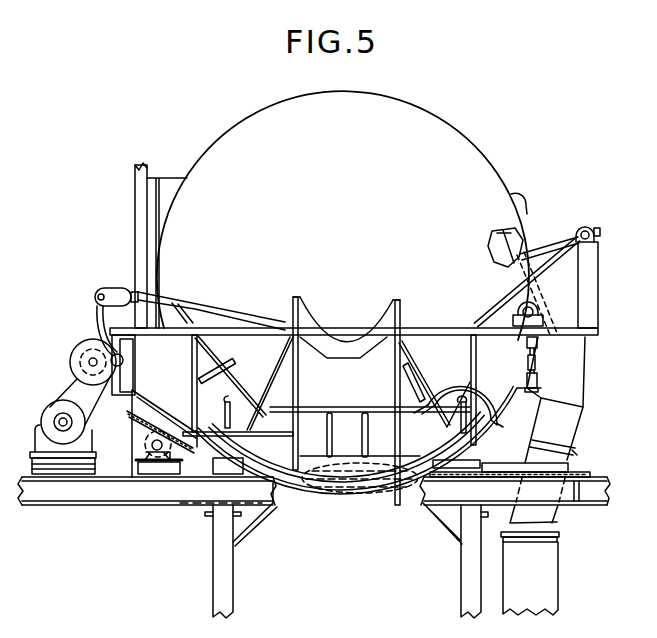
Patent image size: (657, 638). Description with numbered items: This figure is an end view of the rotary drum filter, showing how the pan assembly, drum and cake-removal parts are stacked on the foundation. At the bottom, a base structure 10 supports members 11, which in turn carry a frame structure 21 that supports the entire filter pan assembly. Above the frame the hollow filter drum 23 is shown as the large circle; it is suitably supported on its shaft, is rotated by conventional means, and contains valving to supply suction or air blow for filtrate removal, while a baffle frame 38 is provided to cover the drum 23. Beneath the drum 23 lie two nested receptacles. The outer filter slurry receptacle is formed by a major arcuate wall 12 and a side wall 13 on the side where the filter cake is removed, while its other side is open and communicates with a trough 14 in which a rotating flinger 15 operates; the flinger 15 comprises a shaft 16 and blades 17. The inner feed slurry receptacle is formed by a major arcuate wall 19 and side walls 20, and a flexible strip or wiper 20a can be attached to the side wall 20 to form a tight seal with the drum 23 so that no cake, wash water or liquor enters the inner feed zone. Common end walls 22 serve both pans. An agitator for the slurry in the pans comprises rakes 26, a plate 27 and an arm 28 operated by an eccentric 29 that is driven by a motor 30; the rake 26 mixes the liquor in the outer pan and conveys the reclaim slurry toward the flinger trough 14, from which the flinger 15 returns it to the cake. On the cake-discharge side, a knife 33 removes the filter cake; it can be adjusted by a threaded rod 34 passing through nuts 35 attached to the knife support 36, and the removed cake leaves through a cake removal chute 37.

The base structure 10 is at (598, 492).
The members 11 is at (213, 468).
The major arcuate wall 12 is at (358, 494).
The side wall 13 is at (534, 372).
The trough 14 is at (133, 451).
The flinger 15 is at (143, 443).
The shaft 16 is at (147, 464).
The blades 17 is at (176, 464).
The major arcuate wall 19 is at (275, 492).
The side walls 20 is at (226, 418).
The wiper 20a is at (463, 400).
The frame structure 21 is at (290, 390).
The end walls 22 is at (293, 484).
The filter drum 23 is at (500, 238).
The rakes 26 is at (345, 452).
The plate 27 is at (381, 305).
The arm 28 is at (218, 306).
The eccentric 29 is at (119, 365).
The motor 30 is at (50, 413).
The knife 33 is at (521, 257).
The threaded rod 34 is at (561, 240).
The nuts 35 is at (580, 230).
The knife support 36 is at (616, 289).
The cake removal chute 37 is at (584, 382).
The baffle frame 38 is at (517, 194).